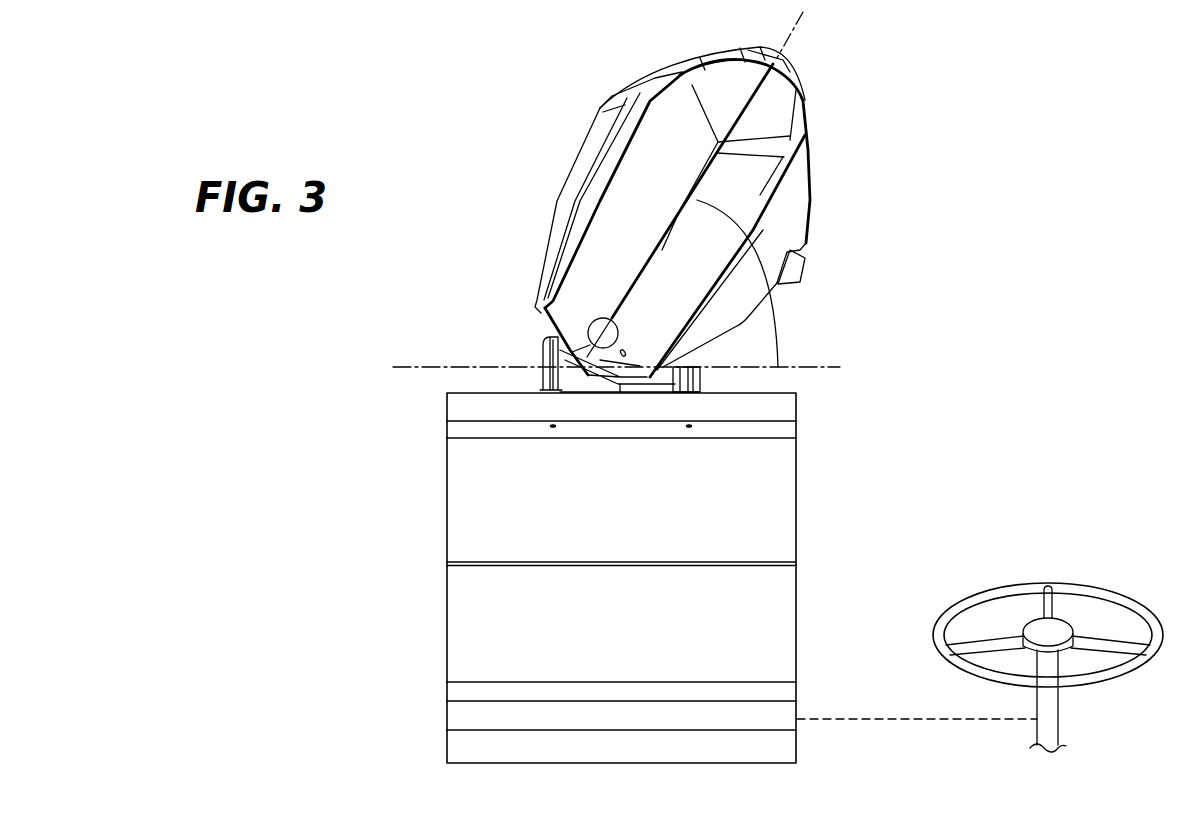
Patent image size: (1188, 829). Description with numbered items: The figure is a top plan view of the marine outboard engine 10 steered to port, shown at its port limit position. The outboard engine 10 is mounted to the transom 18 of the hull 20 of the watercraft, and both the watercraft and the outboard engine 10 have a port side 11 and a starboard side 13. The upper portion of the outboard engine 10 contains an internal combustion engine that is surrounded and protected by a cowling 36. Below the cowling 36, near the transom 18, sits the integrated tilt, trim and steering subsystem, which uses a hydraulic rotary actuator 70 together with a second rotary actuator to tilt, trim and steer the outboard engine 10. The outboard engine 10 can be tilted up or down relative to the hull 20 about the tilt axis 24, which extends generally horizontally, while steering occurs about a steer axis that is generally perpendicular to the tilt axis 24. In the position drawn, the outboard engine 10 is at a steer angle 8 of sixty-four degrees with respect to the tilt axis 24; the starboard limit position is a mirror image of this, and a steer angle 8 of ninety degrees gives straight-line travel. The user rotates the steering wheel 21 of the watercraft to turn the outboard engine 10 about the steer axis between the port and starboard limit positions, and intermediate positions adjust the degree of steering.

The steer angle 8 is at (805, 252).
The marine outboard engine 10 is at (820, 303).
The port side 11 is at (924, 198).
The starboard side 13 is at (521, 162).
The transom 18 is at (765, 401).
The hull 20 is at (797, 495).
The steering wheel 21 is at (986, 594).
The tilt axis 24 is at (838, 369).
The cowling 36 is at (665, 68).
The hydraulic rotary actuator 70 is at (539, 367).